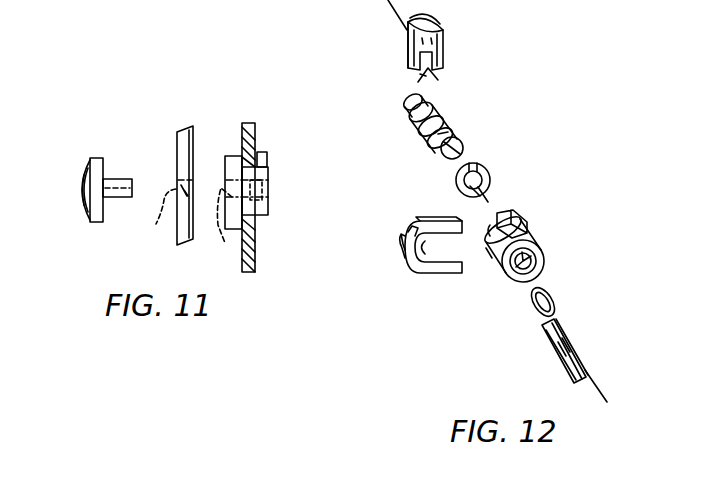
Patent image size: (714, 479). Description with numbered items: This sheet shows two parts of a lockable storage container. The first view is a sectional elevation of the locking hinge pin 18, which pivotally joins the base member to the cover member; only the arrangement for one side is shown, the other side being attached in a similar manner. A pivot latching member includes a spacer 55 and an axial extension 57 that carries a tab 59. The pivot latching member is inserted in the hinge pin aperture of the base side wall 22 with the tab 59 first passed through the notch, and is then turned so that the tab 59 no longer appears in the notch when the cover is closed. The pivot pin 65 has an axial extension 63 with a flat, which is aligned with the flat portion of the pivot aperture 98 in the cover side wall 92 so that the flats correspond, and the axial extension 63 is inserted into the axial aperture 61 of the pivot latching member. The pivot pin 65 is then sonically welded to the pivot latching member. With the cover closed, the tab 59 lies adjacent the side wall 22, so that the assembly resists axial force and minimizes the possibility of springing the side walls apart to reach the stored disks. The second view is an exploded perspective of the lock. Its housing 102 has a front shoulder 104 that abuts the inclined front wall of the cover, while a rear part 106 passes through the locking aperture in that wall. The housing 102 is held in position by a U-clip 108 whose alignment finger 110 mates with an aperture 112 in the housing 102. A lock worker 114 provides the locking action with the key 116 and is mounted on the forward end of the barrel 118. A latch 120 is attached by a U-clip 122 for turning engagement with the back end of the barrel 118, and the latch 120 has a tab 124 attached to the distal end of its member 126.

In FIG. 11, the locking hinge pin 18 is at (166, 80).
In FIG. 11, the side wall 22 is at (255, 252).
In FIG. 11, the spacer 55 is at (230, 156).
In FIG. 11, the axial extension 57 is at (268, 215).
In FIG. 11, the tab 59 is at (266, 155).
In FIG. 11, the axial aperture 61 is at (216, 220).
In FIG. 11, the axial extension 63 is at (118, 179).
In FIG. 11, the pivot pin 65 is at (90, 162).
In FIG. 11, the right side wall 92 is at (177, 142).
In FIG. 11, the pivot aperture 98 is at (154, 212).
In FIG. 12, the housing 102 is at (545, 234).
In FIG. 12, the front shoulder 104 is at (540, 251).
In FIG. 12, the rear part 106 is at (524, 222).
In FIG. 12, the U-clip 108 is at (428, 218).
In FIG. 12, the alignment finger 110 is at (440, 238).
In FIG. 12, the aperture 112 is at (492, 256).
In FIG. 12, the lock worker 114 is at (488, 170).
In FIG. 12, the key 116 is at (548, 326).
In FIG. 12, the barrel 118 is at (460, 122).
In FIG. 12, the latch 120 is at (457, 30).
In FIG. 12, the U-clip 122 is at (438, 80).
In FIG. 12, the tab 124 is at (446, 36).
In FIG. 12, the member 126 is at (406, 43).